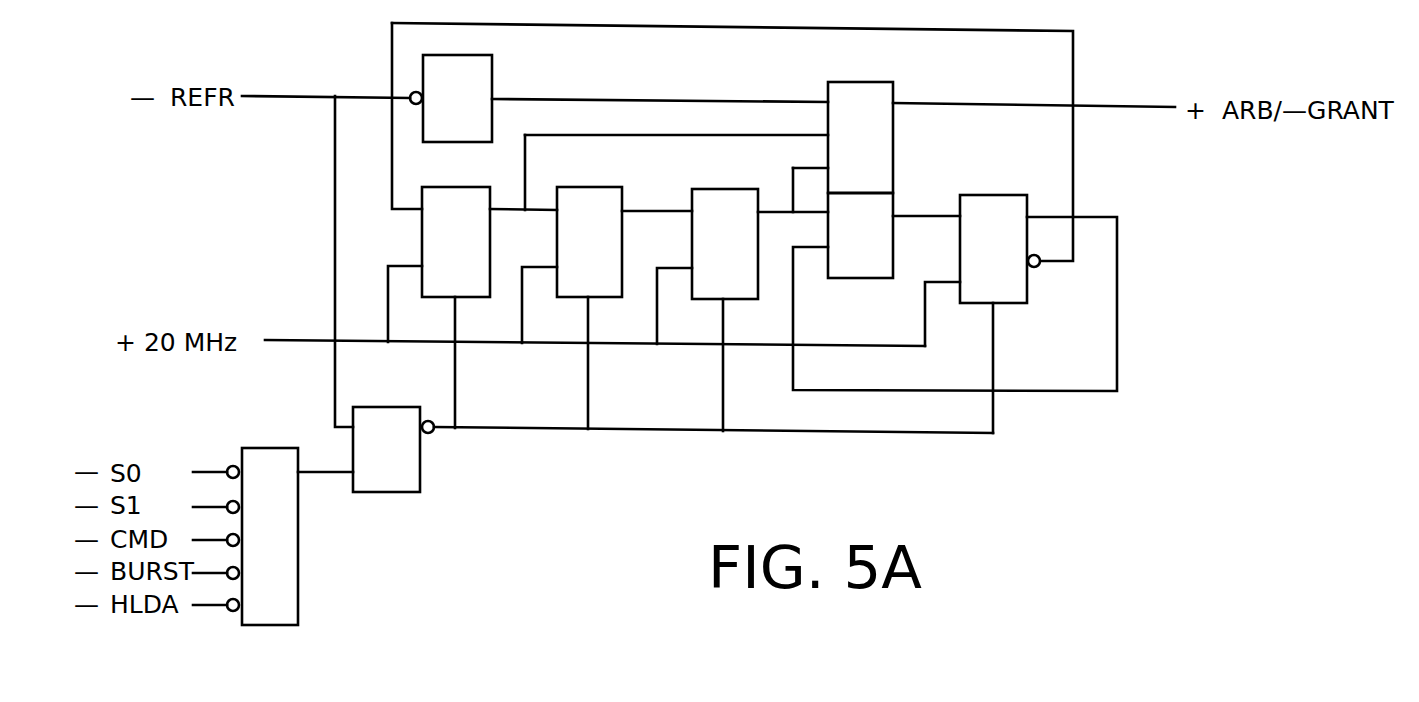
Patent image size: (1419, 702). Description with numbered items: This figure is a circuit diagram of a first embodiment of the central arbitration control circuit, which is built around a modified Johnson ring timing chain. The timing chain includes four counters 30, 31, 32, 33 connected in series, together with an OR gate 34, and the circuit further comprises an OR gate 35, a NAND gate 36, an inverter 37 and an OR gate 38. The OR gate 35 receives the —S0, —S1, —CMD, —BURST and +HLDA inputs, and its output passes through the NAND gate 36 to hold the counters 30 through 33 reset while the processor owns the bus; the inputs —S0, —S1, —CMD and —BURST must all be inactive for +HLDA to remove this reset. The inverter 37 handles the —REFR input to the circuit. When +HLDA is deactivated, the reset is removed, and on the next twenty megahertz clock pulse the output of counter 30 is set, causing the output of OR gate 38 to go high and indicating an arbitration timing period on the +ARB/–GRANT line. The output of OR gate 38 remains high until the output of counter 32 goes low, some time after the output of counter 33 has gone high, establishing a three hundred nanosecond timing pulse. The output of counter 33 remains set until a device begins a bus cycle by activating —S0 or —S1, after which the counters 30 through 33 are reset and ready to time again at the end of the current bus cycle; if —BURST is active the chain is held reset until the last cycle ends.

The counter 30 is at (448, 186).
The counter 31 is at (597, 186).
The counter 32 is at (723, 188).
The counter 33 is at (1003, 192).
The OR gate 34 is at (840, 279).
The OR gate 35 is at (299, 557).
The NAND gate 36 is at (421, 460).
The inverter 37 is at (492, 64).
The OR gate 38 is at (896, 90).